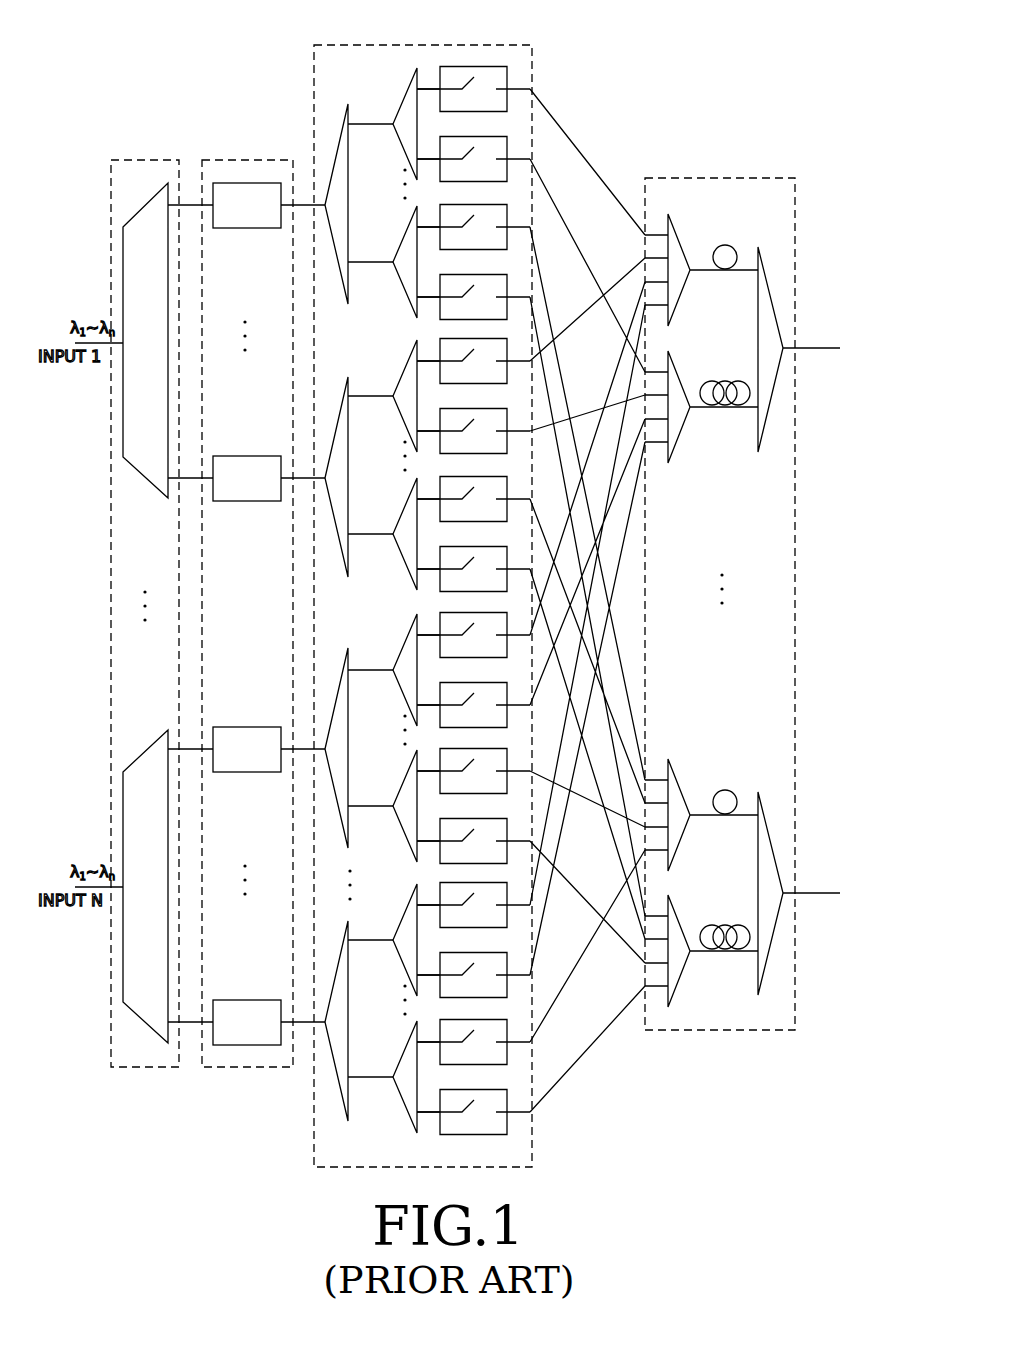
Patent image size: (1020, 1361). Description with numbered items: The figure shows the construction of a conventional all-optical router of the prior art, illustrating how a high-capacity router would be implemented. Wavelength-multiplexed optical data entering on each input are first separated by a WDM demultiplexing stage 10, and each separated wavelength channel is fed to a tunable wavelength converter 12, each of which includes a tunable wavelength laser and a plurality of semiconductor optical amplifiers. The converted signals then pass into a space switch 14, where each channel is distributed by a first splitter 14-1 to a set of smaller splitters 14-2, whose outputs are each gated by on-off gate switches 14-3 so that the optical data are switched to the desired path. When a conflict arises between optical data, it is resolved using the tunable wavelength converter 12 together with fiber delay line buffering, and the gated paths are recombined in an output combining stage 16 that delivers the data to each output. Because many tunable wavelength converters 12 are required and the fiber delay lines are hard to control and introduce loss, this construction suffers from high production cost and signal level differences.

The WDM demultiplexer stage 10 is at (143, 160).
The tunable wavelength converter 12 is at (246, 160).
The space switch 14 is at (388, 583).
The 1xN optical splitter 14-1 is at (337, 152).
The 1x(d+1) optical splitter 14-2 is at (402, 93).
The on-off gate switch 14-3 is at (473, 62).
The output combiner stage 16 is at (710, 178).